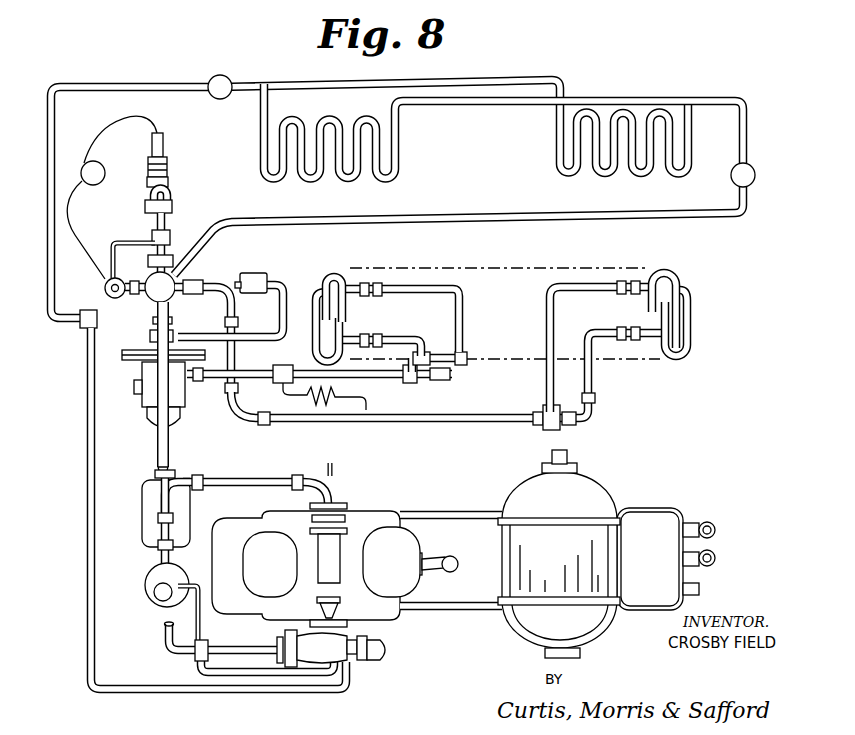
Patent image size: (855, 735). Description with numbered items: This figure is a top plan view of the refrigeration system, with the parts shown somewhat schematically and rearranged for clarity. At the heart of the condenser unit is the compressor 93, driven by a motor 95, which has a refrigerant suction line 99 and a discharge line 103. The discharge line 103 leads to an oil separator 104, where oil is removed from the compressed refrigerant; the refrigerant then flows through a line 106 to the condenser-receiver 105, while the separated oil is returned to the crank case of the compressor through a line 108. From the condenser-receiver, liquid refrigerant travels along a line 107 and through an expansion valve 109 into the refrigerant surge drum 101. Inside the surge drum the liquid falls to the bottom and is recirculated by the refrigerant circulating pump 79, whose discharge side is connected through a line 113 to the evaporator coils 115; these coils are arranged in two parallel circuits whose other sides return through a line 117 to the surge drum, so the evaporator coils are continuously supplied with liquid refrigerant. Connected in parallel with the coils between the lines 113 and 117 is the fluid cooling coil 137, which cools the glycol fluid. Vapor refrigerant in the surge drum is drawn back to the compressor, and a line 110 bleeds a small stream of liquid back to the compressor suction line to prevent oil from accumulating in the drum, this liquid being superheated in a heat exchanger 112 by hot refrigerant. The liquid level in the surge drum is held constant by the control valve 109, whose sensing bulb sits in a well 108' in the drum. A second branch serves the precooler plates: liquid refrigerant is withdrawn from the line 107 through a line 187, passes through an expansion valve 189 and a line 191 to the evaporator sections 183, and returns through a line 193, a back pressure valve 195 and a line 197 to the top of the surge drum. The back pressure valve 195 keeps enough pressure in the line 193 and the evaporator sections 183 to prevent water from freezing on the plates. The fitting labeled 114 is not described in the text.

The refrigerant circulating pump 79 is at (143, 383).
The compressor 93 is at (408, 520).
The motor 95 is at (594, 488).
The refrigerant inlet or suction line 99 is at (172, 452).
The refrigerant surge drum 101 is at (150, 294).
The discharge line 103 is at (265, 480).
The oil separator 104 is at (151, 571).
The condenser-receiver 105 is at (487, 612).
The line 106 is at (153, 592).
The liquid refrigerant line 107 is at (89, 527).
The line 108 is at (219, 644).
The well 108' is at (145, 197).
The expansion valve 109 is at (104, 284).
The line 110 is at (235, 283).
The heat exchanger 112 is at (247, 277).
The line 113 is at (391, 373).
The pipe 114 is at (281, 283).
The evaporator coils 115 is at (341, 276).
The line 117 is at (490, 423).
The fluid cooling coil 137 is at (333, 395).
The evaporator sections 183 is at (400, 139).
The line 187 is at (191, 82).
The expansion valve 189 is at (229, 80).
The line 191 is at (522, 80).
The line 193 is at (661, 97).
The back pressure valve 195 is at (748, 170).
The line 197 is at (628, 222).